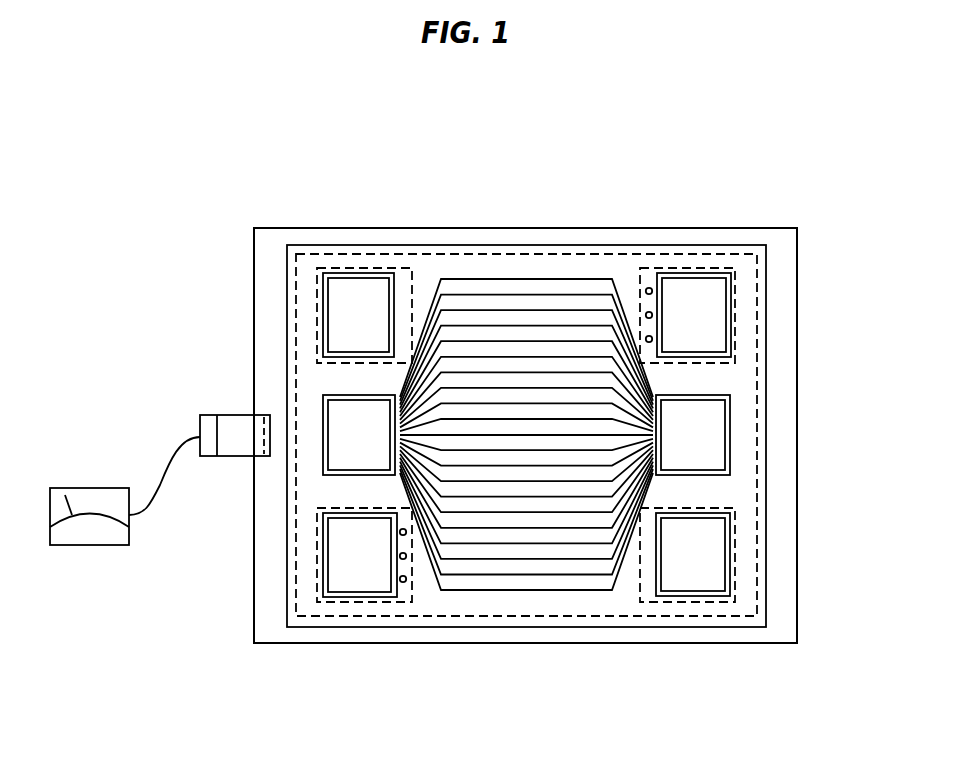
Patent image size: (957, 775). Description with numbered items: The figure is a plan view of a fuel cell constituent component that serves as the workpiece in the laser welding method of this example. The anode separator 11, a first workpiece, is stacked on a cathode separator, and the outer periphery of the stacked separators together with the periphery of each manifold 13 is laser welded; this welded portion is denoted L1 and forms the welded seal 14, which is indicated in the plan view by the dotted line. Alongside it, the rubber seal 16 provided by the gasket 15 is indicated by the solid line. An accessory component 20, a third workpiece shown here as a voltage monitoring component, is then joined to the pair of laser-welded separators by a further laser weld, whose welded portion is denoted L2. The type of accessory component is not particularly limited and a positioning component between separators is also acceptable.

The anode separator 11 is at (785, 280).
The manifold 13 is at (527, 435).
The welded seal 14 is at (431, 425).
The gasket 15 is at (436, 424).
The rubber seal 16 is at (355, 270).
The accessory component 20 is at (240, 423).
The welded portion L1 is at (383, 268).
The welded portion L2 is at (263, 437).